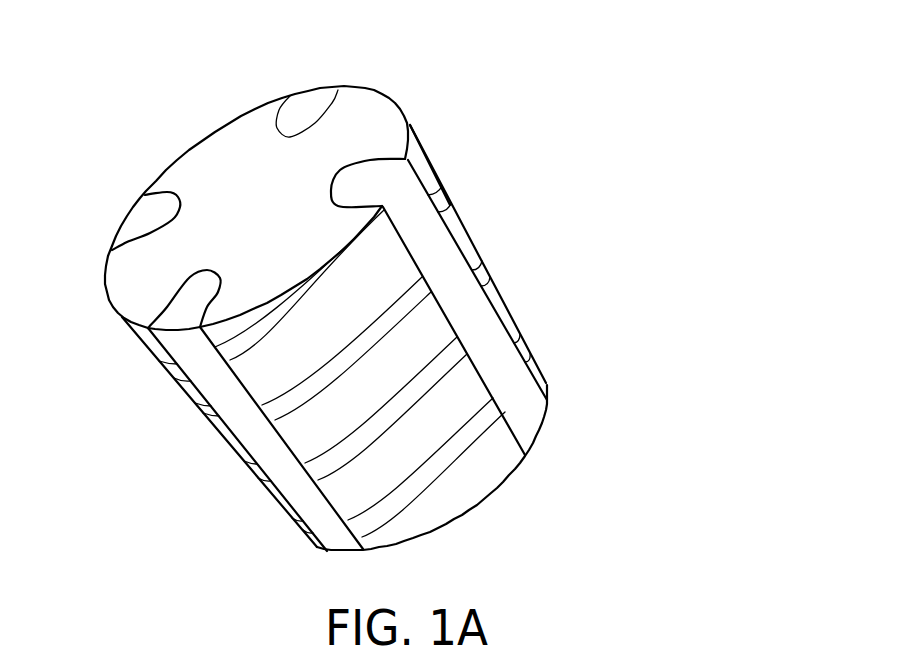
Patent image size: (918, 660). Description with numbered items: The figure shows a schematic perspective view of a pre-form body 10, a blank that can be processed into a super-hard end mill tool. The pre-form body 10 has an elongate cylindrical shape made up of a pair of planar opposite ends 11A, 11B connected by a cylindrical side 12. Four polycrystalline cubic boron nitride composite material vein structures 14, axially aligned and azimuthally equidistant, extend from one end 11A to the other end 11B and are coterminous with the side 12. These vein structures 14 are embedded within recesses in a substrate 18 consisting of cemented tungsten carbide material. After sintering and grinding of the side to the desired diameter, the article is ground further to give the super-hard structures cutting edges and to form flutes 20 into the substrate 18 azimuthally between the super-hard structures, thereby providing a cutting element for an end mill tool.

The pre-form body 10 is at (482, 138).
The planar end 11A is at (213, 118).
The planar end 11B is at (490, 512).
The cylindrical side 12 is at (483, 230).
The polycrystalline cubic boron nitride composite material vein structures 14 is at (315, 98).
The substrate 18 is at (213, 163).
The flutes 20 is at (450, 205).